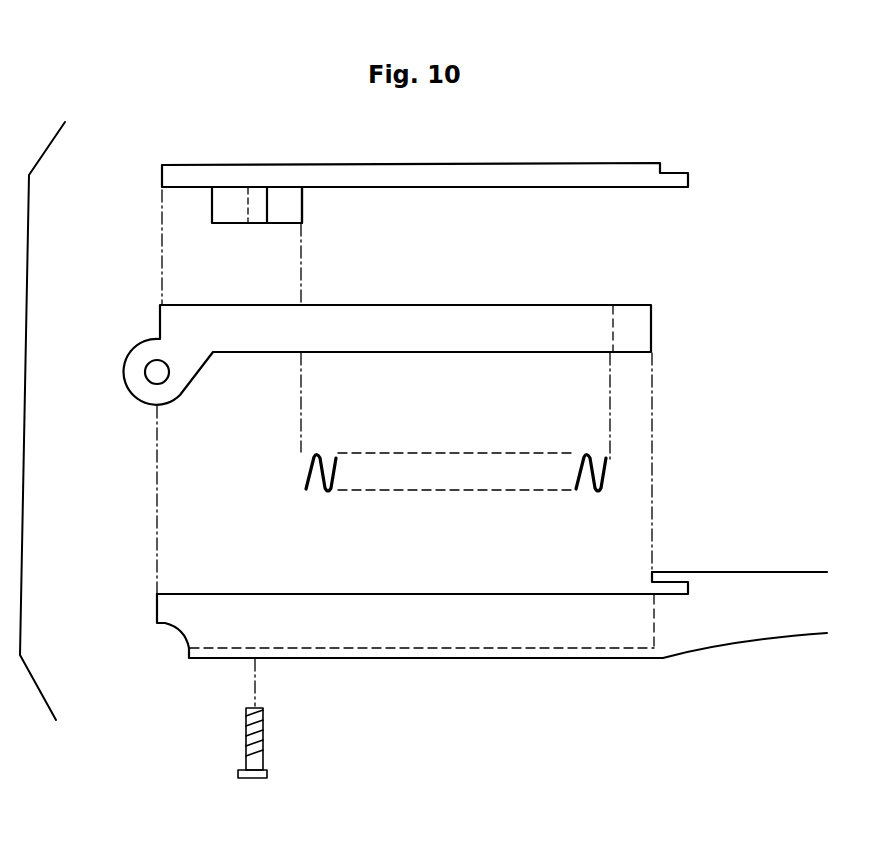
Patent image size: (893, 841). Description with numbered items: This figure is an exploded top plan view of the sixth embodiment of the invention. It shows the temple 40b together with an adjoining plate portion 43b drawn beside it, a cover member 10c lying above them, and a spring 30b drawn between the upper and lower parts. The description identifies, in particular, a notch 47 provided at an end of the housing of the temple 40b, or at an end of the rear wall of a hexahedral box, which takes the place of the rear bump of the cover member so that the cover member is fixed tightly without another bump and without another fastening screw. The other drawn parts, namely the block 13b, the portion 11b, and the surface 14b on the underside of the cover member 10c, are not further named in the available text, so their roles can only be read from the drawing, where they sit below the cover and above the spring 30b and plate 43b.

The top plate 10c is at (641, 158).
The engaging block 13b is at (257, 223).
The engaging portion 11b is at (293, 200).
The lower surface of plate 14b is at (398, 187).
The spring 30b is at (500, 458).
The bottom plate 43b is at (583, 612).
The temple 40b is at (726, 582).
The notch 47 is at (670, 585).